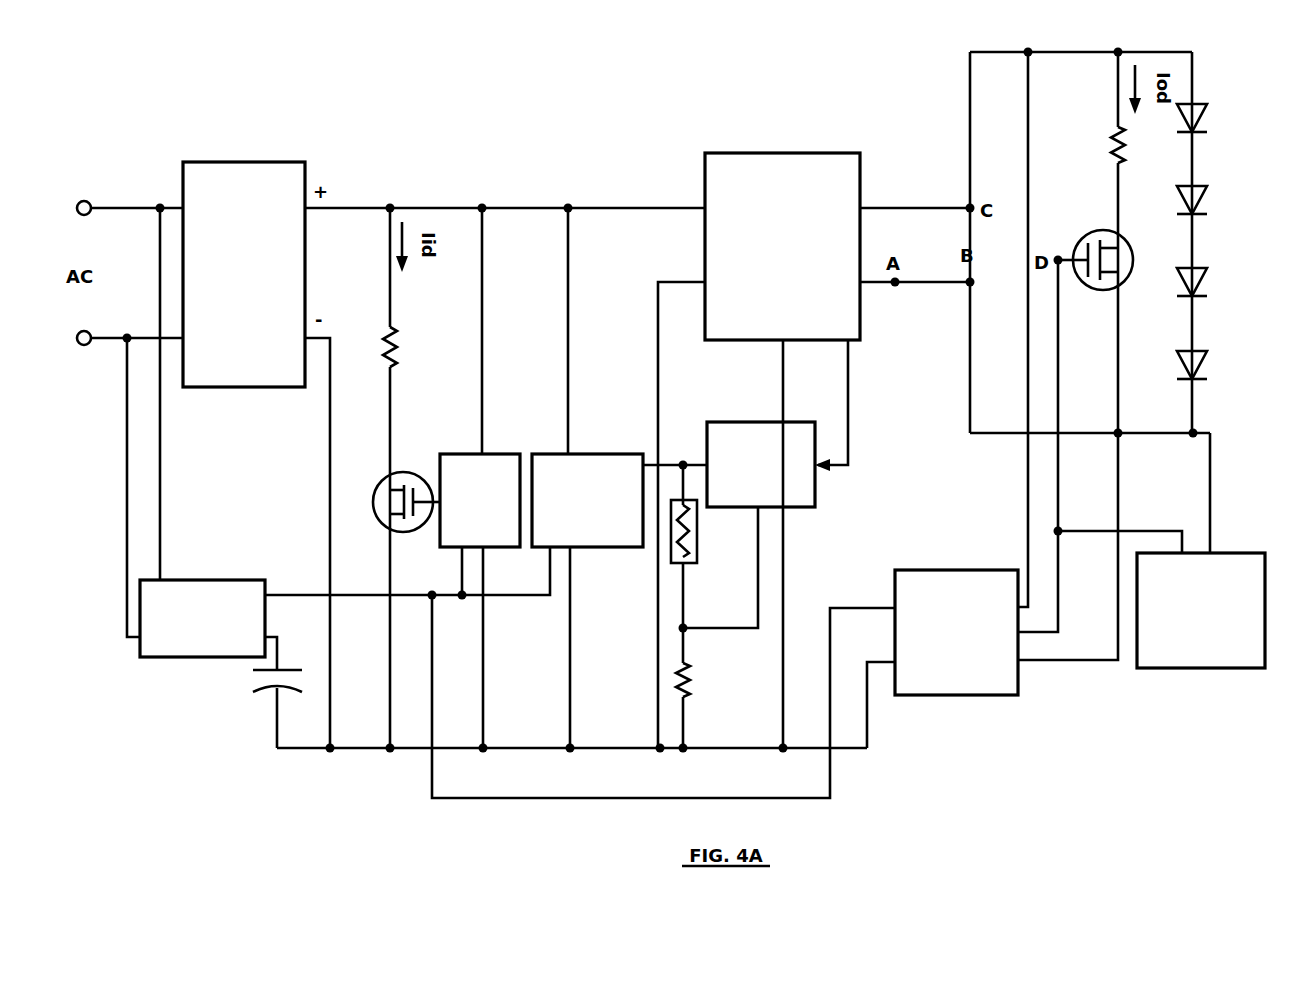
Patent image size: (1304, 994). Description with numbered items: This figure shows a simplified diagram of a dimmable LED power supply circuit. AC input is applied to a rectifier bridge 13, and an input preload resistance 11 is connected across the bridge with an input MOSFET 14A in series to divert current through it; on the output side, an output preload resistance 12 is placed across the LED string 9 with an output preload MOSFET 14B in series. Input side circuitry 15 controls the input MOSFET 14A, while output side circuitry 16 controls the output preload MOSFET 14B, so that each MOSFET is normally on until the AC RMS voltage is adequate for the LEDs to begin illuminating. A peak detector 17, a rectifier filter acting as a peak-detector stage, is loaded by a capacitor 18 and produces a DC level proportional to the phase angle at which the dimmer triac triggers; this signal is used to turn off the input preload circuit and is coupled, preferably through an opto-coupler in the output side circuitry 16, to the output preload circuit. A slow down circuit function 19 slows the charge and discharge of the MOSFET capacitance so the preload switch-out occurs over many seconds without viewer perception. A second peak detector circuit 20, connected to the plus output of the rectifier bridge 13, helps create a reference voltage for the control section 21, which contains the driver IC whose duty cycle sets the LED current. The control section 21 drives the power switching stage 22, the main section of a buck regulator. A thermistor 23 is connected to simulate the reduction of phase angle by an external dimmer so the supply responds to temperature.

The LED string 9 is at (1224, 95).
The input preload resistance 11 is at (395, 345).
The output preload resistance 12 is at (1110, 150).
The rectifier bridge 13 is at (240, 162).
The input MOSFET 14A is at (405, 472).
The output preload MOSFET 14B is at (1108, 230).
The input side circuitry 15 is at (495, 454).
The output side circuitry 16 is at (945, 570).
The peak detector 17 is at (195, 580).
The capacitor 18 is at (262, 682).
The slow down circuit function 19 is at (1197, 668).
The second peak detector circuit 20 is at (580, 454).
The control section 21 is at (740, 422).
The power switching stage 22 is at (795, 153).
The thermistor 23 is at (697, 563).